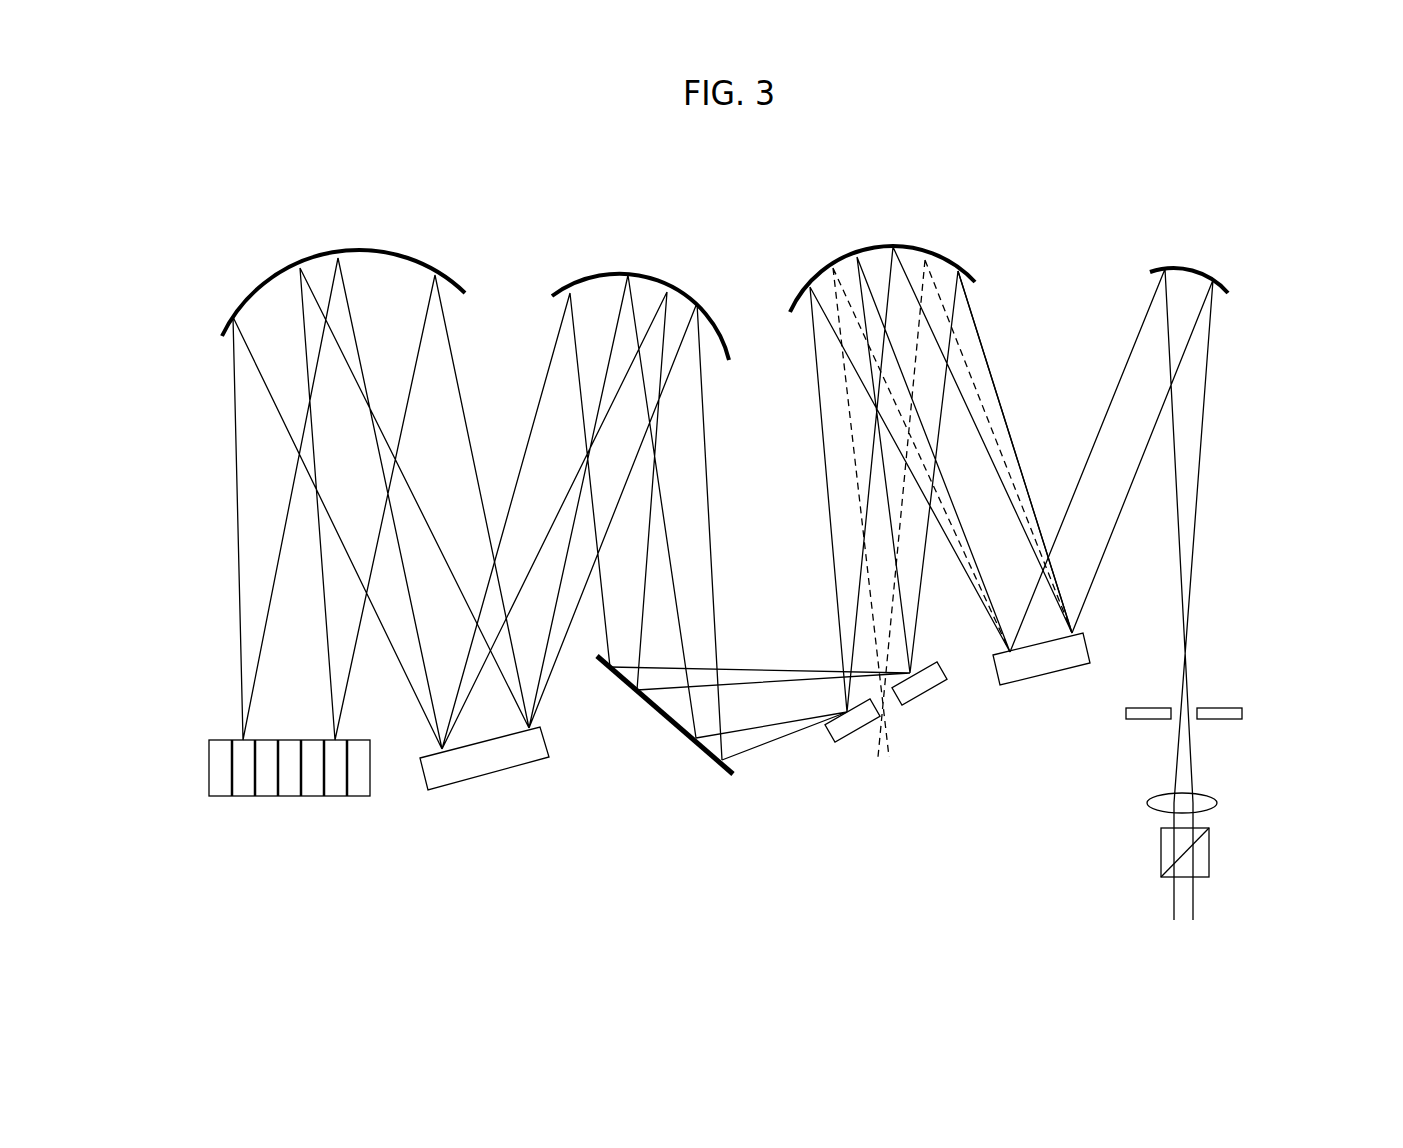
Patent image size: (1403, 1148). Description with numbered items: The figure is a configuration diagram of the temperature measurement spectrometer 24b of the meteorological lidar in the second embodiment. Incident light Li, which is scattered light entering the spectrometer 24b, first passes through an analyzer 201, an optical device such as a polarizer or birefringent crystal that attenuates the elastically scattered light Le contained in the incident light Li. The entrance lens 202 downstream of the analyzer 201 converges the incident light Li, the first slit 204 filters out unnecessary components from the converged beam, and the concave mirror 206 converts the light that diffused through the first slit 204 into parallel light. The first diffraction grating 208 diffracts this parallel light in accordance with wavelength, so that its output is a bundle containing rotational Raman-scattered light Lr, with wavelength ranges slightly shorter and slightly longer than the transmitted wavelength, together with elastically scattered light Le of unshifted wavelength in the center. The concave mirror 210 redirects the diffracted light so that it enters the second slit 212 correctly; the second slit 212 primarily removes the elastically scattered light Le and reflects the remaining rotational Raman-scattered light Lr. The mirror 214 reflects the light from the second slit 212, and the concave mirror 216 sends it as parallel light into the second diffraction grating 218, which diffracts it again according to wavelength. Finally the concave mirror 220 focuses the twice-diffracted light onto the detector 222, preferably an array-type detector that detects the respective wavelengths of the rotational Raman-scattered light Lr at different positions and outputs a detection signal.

The spectrometer 24b is at (775, 860).
The analyzer 201 is at (1160, 838).
The entrance lens 202 is at (1203, 793).
The first slit 204 is at (1235, 707).
The concave mirror 206 is at (1182, 268).
The first diffraction grating 208 is at (1010, 685).
The concave mirror 210 is at (870, 247).
The second slit 212 is at (857, 735).
The mirror 214 is at (680, 727).
The concave mirror 216 is at (647, 276).
The second diffraction grating 218 is at (490, 777).
The concave mirror 220 is at (353, 248).
The detector 222 is at (288, 797).
The incident light Li is at (1207, 893).
The elastically scattered light Le is at (1002, 405).
The rotational Raman-scattered light Lr is at (988, 362).